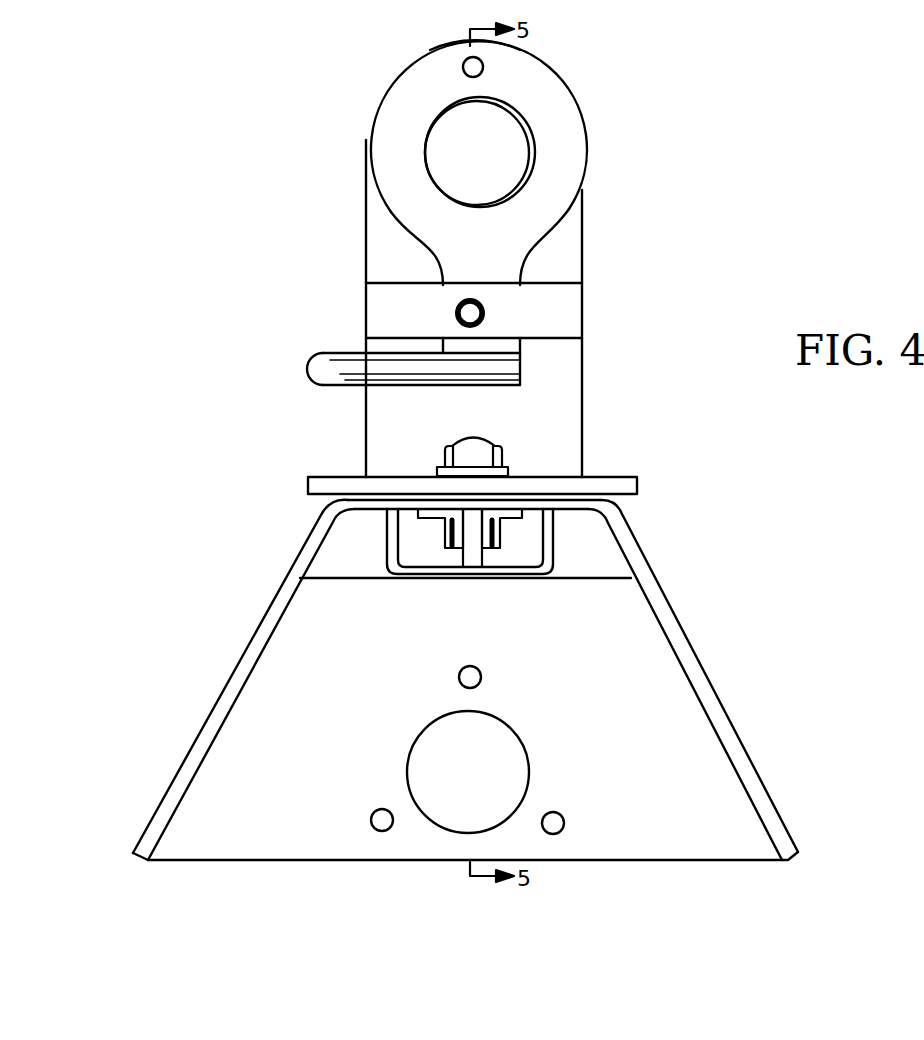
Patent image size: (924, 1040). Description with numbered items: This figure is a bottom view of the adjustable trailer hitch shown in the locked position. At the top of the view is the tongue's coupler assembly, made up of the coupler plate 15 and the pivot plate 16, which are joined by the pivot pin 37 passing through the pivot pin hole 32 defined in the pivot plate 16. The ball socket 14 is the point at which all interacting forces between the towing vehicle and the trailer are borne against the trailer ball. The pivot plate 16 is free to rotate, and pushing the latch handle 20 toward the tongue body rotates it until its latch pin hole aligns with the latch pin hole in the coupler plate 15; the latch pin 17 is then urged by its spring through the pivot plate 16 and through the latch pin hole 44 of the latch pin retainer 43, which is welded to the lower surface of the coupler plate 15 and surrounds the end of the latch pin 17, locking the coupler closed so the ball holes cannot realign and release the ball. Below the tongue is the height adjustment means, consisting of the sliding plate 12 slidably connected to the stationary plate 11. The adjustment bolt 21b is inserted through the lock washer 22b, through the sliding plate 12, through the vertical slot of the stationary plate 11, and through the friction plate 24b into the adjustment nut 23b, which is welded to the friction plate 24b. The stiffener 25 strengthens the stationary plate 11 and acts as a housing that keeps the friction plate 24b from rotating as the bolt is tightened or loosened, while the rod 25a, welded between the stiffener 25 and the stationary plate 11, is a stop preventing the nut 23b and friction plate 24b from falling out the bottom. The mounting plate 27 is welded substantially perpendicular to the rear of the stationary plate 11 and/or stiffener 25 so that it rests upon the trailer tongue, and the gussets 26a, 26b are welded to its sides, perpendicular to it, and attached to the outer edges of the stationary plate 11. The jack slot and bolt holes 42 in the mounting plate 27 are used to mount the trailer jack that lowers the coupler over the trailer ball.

The stationary plate 11 is at (600, 499).
The sliding plate 12 is at (615, 487).
The ball socket 14 is at (488, 165).
The coupler plate 15 is at (560, 258).
The pivot plate 16 is at (558, 121).
The latch pin 17 is at (461, 304).
The latch or pivot plate handle 20 is at (310, 365).
The adjustment bolt 21b is at (478, 458).
The lock washer 22b is at (508, 470).
The adjustment nut 23b is at (500, 531).
The friction plate 24b is at (420, 511).
The stiffener 25 is at (549, 553).
The rod 25a is at (468, 558).
The gusset 26a is at (245, 651).
The gusset 26b is at (693, 650).
The mounting plate 27 is at (476, 729).
The pivot pin hole 32 is at (464, 62).
The pivot pin 37 is at (483, 63).
The jack slot and bolt holes 42 is at (627, 726).
The latch pin retainer 43 is at (560, 318).
The latch pin hole 44 is at (455, 313).